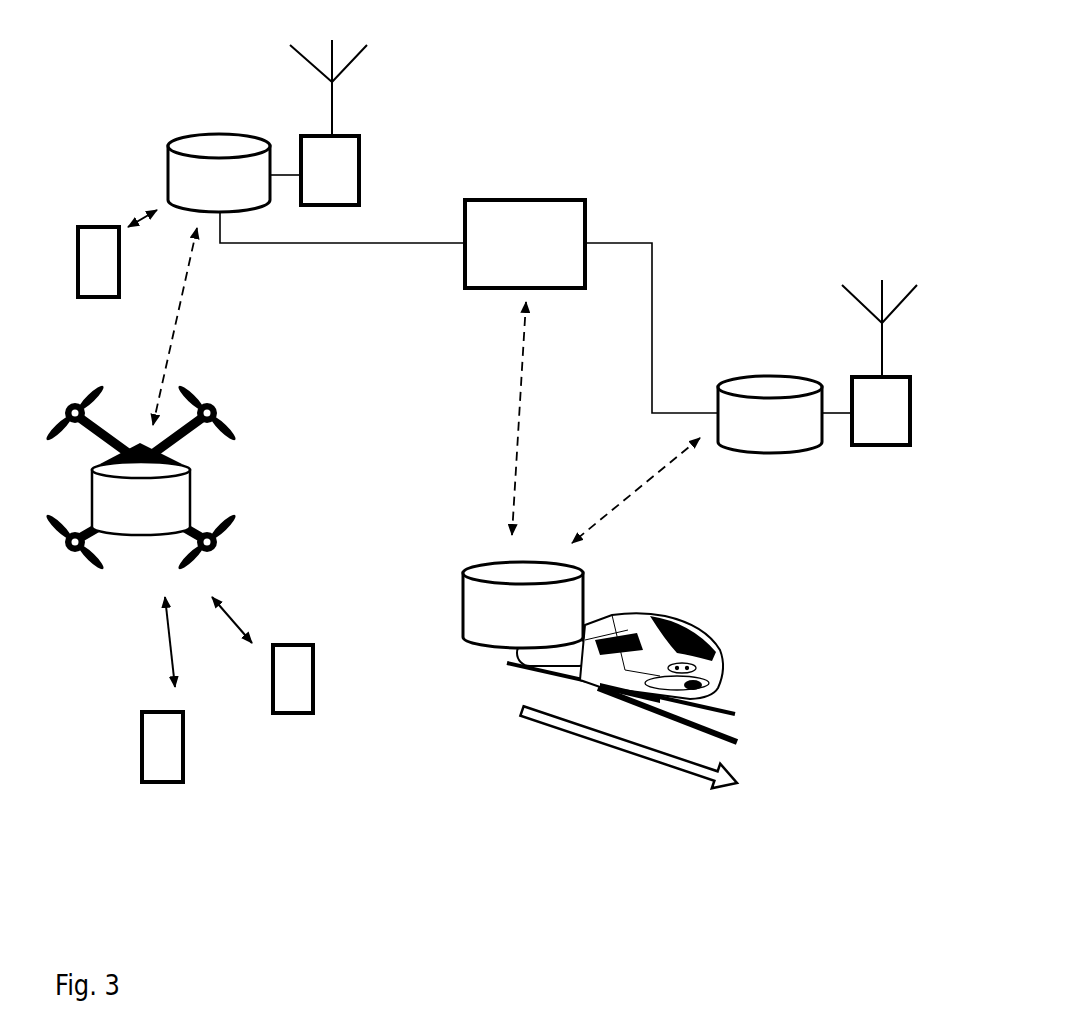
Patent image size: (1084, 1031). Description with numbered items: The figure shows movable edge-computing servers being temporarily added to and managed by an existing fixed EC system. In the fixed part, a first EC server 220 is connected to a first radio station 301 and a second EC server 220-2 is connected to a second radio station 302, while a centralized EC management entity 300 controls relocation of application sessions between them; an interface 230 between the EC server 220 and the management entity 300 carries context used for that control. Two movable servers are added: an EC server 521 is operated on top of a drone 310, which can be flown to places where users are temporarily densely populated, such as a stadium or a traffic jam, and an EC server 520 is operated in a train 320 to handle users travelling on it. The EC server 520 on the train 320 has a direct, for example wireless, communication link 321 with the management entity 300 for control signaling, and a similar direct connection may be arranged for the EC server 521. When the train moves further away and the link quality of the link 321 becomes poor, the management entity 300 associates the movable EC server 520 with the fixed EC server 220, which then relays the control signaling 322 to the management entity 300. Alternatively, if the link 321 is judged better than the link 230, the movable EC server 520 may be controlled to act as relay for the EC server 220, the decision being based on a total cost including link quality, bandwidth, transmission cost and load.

The second EC server 220-2 is at (168, 173).
The first EC server 220 is at (720, 393).
The interface 230 is at (625, 238).
The EC management entity 300 is at (525, 244).
The first radio station 301 is at (910, 412).
The second radio station 302 is at (360, 162).
The drone 310 is at (191, 484).
The train 320 is at (745, 600).
The direct communication link 321 is at (512, 435).
The relayed control signaling 322 is at (627, 480).
The movable EC server on train 520 is at (523, 605).
The movable EC server on drone 521 is at (141, 498).